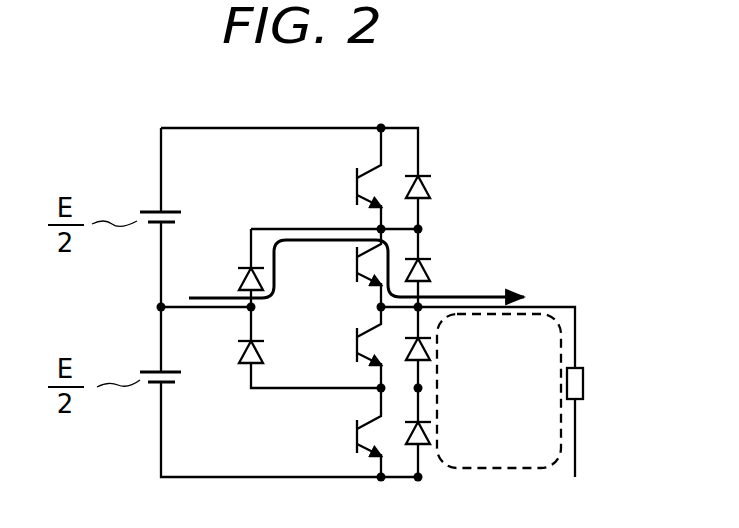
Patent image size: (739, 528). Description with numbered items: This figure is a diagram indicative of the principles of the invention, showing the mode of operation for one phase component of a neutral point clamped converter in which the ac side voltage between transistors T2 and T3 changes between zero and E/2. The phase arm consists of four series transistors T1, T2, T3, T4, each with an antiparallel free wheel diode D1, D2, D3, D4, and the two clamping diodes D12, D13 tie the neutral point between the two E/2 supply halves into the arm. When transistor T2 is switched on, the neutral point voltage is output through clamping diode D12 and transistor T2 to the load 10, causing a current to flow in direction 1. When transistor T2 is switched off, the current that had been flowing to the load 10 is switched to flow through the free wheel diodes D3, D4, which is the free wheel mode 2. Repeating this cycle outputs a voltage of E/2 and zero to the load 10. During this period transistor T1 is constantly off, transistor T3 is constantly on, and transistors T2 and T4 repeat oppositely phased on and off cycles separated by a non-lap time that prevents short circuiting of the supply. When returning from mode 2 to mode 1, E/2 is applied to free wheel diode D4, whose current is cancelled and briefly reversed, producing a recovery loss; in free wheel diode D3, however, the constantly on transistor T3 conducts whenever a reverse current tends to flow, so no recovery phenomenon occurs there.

The transistor T1 is at (353, 177).
The transistor T2 is at (353, 251).
The transistor T3 is at (354, 331).
The transistor T4 is at (354, 424).
The free wheel diode D1 is at (431, 190).
The free wheel diode D2 is at (431, 276).
The free wheel diode D3 is at (431, 350).
The free wheel diode D4 is at (431, 436).
The clamping diode D12 is at (240, 284).
The clamping diode D13 is at (240, 356).
The load 10 is at (584, 383).
The current direction 1 is at (376, 270).
The free wheel mode 2 is at (499, 391).